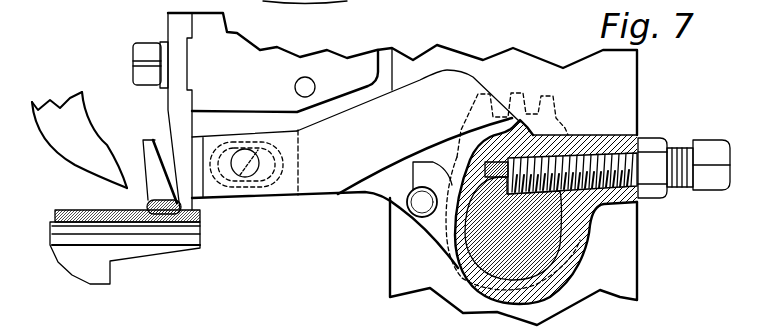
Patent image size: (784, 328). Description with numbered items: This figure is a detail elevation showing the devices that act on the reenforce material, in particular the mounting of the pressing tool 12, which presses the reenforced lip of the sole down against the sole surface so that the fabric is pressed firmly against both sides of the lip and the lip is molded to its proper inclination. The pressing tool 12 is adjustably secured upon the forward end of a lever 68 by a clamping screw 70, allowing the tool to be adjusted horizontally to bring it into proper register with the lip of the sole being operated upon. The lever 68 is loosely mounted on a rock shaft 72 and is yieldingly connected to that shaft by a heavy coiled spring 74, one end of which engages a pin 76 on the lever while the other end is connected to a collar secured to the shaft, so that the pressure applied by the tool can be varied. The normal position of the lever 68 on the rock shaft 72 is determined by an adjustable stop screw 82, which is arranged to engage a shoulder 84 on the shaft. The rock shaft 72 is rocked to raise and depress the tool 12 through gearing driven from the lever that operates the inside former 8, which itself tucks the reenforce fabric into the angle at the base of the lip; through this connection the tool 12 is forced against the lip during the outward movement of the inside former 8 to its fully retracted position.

The inside former 8 is at (110, 173).
The pressing tool 12 is at (149, 140).
The lever 68 is at (318, 188).
The clamping screw 70 is at (257, 178).
The rock shaft 72 is at (548, 245).
The coiled spring 74 is at (423, 172).
The pin 76 is at (422, 202).
The adjustable stop screw 82 is at (558, 163).
The shoulder 84 is at (503, 197).